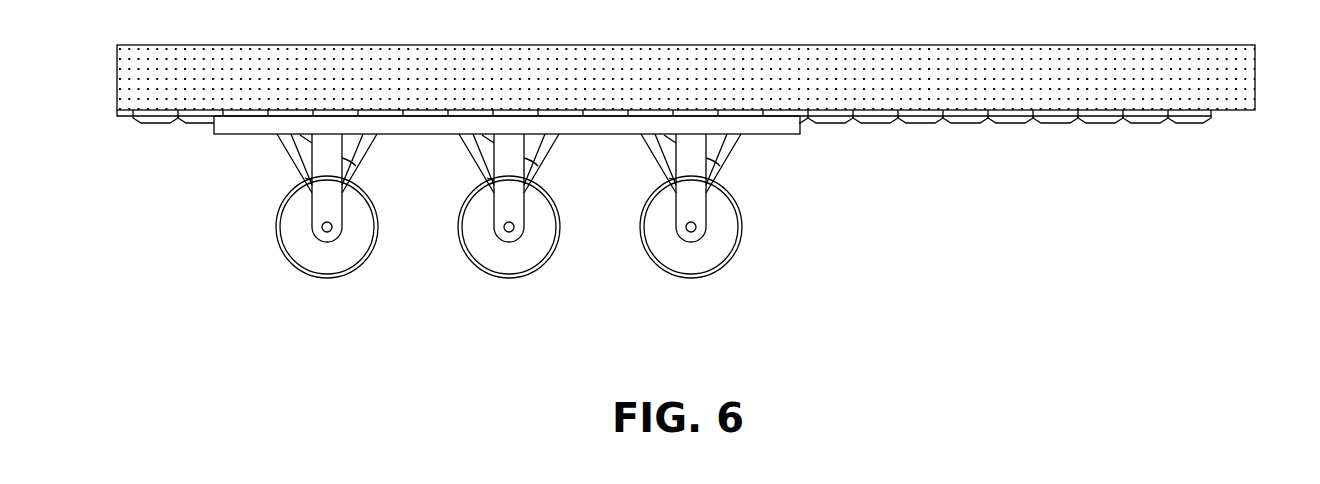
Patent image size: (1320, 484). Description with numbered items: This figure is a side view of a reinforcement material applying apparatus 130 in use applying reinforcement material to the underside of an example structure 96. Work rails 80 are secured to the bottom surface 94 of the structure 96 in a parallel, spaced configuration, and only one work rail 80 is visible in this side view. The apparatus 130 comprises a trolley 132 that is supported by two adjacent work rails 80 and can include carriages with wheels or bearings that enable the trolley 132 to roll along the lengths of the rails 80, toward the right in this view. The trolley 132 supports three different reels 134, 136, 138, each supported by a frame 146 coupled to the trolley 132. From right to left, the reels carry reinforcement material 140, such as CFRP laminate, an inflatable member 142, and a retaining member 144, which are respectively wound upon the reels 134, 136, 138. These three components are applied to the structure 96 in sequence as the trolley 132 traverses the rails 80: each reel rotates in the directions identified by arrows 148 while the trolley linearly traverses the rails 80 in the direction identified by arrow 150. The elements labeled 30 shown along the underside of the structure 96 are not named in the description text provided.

The suction cups / pads 30 is at (1100, 123).
The work rails 80 is at (1158, 169).
The bottom surface 94 is at (1230, 110).
The structure 96 is at (1238, 73).
The reinforcement material applying apparatus 130 is at (182, 231).
The trolley 132 is at (241, 164).
The reel 134 is at (653, 238).
The reel 136 is at (472, 238).
The reel 138 is at (288, 238).
The reinforcement material 140 is at (728, 178).
The inflatable member 142 is at (546, 182).
The retaining member 144 is at (356, 180).
The frame 146 is at (335, 208).
The arrows 148 is at (362, 285).
The arrow 150 is at (921, 227).